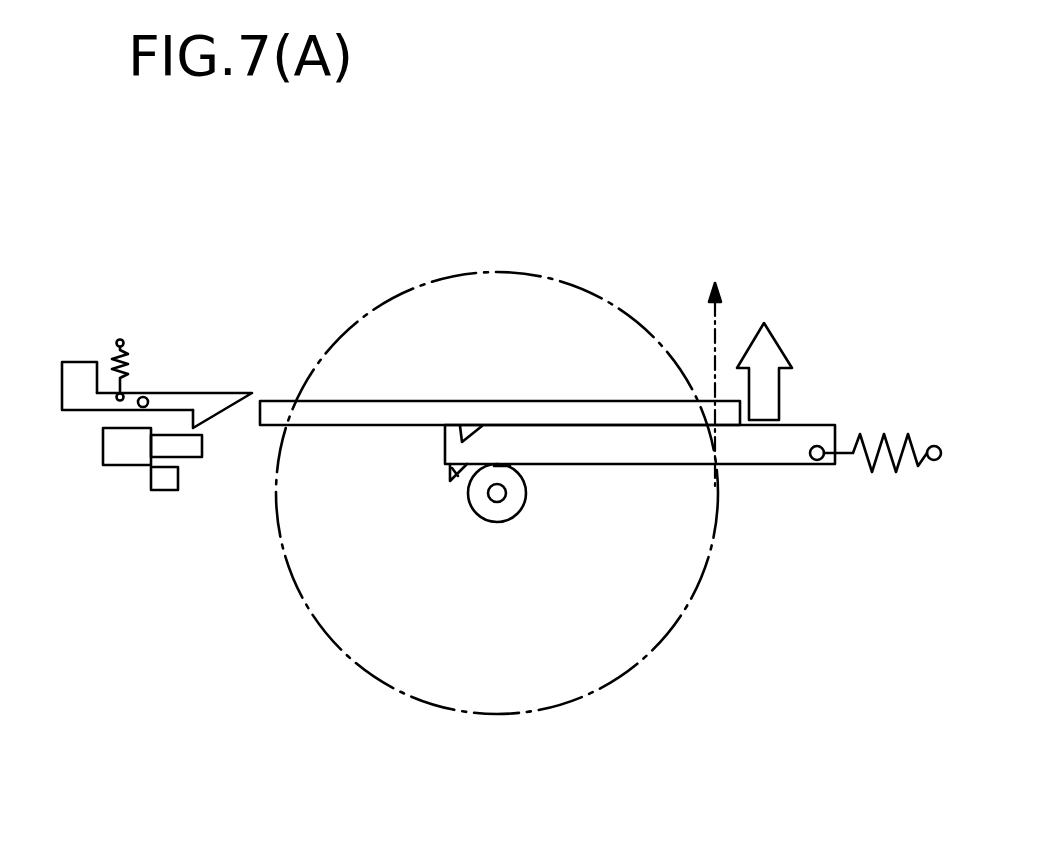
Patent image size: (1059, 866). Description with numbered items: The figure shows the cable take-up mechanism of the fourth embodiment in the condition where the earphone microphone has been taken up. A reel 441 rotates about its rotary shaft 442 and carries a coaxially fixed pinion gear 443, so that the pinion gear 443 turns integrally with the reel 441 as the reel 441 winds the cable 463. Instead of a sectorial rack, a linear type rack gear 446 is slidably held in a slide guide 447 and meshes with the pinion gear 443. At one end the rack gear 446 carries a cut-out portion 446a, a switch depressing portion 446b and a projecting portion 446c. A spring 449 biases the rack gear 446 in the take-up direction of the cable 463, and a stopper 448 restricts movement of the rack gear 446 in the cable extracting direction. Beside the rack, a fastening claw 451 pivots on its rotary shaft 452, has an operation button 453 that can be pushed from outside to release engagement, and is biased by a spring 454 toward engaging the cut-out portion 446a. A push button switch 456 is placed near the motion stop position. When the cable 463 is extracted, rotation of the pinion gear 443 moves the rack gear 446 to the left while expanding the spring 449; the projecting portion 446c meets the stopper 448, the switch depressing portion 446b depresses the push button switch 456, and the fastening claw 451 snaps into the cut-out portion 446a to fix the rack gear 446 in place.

The reel 441 is at (675, 623).
The rotary shaft of the reel 442 is at (497, 493).
The pinion gear 443 is at (502, 471).
The rack gear 446 is at (767, 465).
The cut-out portion 446a is at (469, 433).
The switch depressing portion 446b is at (445, 448).
The projecting portion 446c is at (457, 477).
The slide guide 447 is at (388, 410).
The stopper 448 is at (178, 478).
The spring of the rack gear 449 is at (887, 470).
The fastening claw 451 is at (213, 413).
The rotary shaft of the fastening claw 452 is at (144, 397).
The operation button of the fastening claw 453 is at (75, 392).
The spring of the fastening claw 454 is at (115, 357).
The push button switch 456 is at (128, 458).
The cable 463 is at (718, 320).